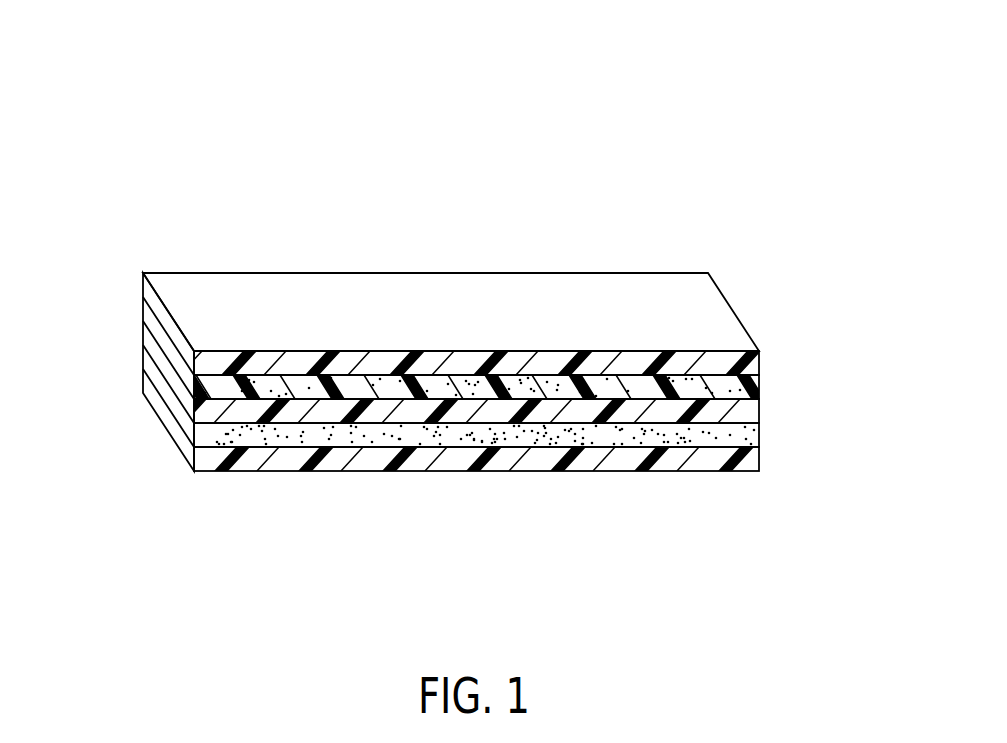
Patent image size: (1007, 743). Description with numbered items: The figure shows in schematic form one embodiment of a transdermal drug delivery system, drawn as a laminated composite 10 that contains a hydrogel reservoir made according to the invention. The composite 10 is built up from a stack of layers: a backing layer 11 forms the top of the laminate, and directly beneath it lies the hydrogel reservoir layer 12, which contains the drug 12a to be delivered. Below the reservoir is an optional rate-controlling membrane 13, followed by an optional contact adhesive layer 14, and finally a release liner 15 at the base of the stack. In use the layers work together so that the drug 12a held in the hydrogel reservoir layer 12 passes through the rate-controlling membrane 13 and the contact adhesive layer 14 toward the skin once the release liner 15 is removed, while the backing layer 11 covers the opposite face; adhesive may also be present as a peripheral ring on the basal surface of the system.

The laminated composite 10 is at (776, 127).
The backing layer 11 is at (455, 303).
The hydrogel reservoir layer 12 is at (130, 305).
The drug 12a is at (723, 388).
The rate-controlling membrane 13 is at (768, 413).
The contact adhesive layer 14 is at (768, 439).
The release liner 15 is at (768, 468).